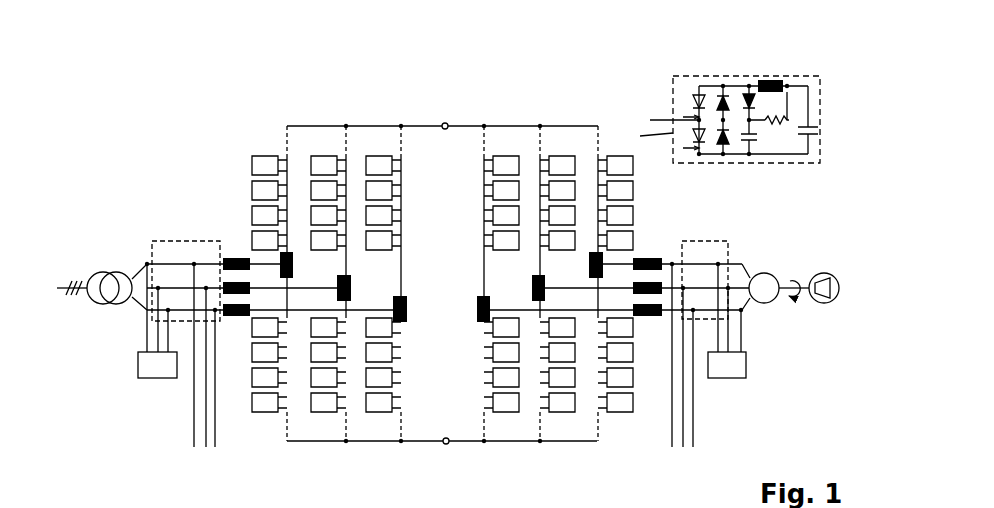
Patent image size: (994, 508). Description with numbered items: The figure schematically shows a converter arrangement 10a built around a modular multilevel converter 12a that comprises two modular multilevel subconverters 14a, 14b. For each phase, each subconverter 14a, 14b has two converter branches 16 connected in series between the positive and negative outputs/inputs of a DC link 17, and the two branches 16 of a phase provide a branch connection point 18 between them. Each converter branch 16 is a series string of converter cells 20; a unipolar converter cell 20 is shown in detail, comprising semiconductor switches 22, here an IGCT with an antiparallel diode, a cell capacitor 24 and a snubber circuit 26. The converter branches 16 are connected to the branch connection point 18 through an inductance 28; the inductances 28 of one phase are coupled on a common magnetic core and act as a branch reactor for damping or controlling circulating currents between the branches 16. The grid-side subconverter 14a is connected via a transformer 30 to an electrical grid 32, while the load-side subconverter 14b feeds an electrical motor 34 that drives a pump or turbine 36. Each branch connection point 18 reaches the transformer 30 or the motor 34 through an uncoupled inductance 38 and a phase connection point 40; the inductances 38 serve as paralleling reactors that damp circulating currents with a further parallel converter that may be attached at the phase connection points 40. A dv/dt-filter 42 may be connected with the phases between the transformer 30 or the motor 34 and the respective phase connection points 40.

The converter arrangement 10a is at (636, 75).
The modular multilevel converter 12a is at (220, 88).
The grid-side modular multilevel subconverter 14a is at (272, 85).
The load-side modular multilevel subconverter 14b is at (520, 100).
The converter branch 16 is at (218, 175).
The DC link 17 is at (418, 145).
The branch connection point 18 is at (296, 272).
The converter cell 20 is at (747, 103).
The semiconductor switches 22 is at (700, 72).
The cell capacitor 24 is at (812, 130).
The snubber circuit 26 is at (768, 72).
The inductance 28 is at (278, 262).
The transformer 30 is at (112, 268).
The electrical grid 32 is at (57, 295).
The electrical motor 34 is at (764, 303).
The pump or turbine 36 is at (822, 273).
The inductance 38 is at (220, 263).
The phase connection point 40 is at (176, 247).
The dv/dt-filter 42 is at (143, 378).